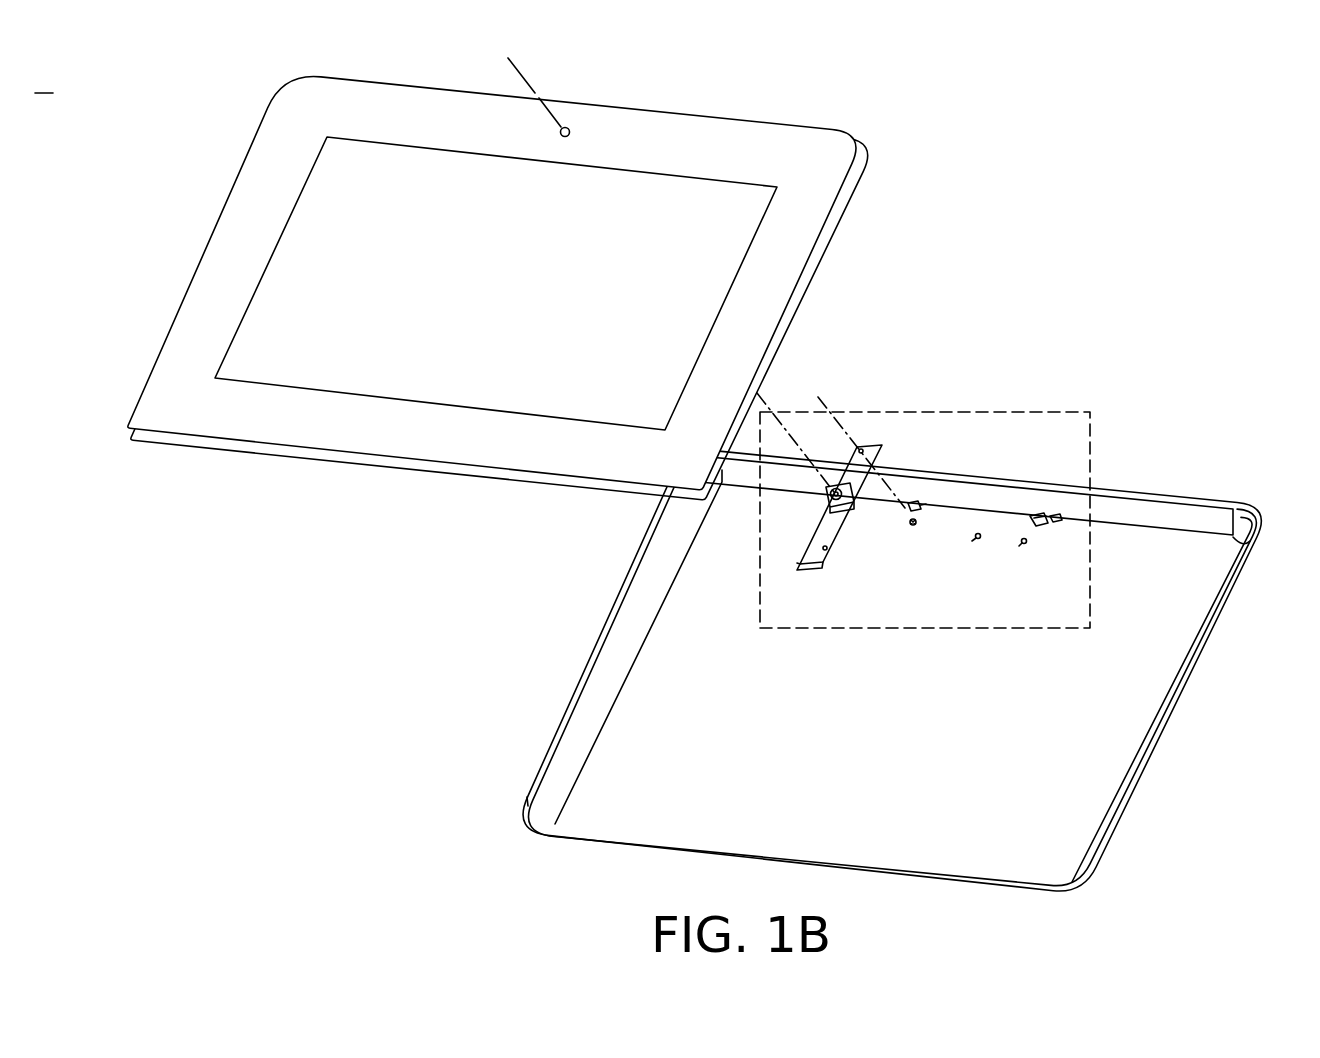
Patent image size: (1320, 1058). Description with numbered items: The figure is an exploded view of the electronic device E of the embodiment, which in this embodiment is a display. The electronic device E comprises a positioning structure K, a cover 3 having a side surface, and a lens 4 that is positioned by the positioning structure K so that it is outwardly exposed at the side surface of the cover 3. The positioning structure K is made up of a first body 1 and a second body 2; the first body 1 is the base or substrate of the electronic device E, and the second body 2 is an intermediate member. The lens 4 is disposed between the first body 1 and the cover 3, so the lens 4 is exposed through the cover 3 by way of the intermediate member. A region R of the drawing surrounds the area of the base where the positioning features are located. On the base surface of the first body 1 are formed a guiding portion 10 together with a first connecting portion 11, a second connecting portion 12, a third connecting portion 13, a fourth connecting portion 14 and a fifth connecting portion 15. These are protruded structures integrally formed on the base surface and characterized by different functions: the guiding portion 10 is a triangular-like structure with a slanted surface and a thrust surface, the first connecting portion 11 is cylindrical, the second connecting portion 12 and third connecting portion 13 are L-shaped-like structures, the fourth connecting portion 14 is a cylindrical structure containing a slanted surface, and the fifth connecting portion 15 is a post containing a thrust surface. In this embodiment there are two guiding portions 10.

The electronic device E is at (1213, 222).
The first body 1 is at (598, 629).
The second body 2 is at (859, 442).
The cover 3 is at (217, 232).
The lens 4 is at (830, 493).
The positioning structure K is at (1252, 213).
The hinge region R is at (1055, 408).
The guiding portion 10 is at (978, 537).
The first connecting portion 11 is at (914, 527).
The second connecting portion 12 is at (915, 503).
The third connecting portion 13 is at (1060, 516).
The fourth connecting portion 14 is at (1033, 514).
The fifth connecting portion 15 is at (960, 513).